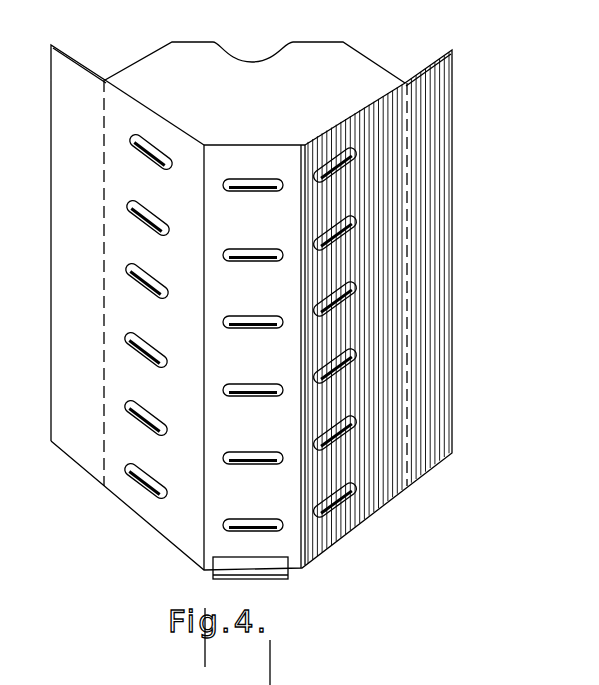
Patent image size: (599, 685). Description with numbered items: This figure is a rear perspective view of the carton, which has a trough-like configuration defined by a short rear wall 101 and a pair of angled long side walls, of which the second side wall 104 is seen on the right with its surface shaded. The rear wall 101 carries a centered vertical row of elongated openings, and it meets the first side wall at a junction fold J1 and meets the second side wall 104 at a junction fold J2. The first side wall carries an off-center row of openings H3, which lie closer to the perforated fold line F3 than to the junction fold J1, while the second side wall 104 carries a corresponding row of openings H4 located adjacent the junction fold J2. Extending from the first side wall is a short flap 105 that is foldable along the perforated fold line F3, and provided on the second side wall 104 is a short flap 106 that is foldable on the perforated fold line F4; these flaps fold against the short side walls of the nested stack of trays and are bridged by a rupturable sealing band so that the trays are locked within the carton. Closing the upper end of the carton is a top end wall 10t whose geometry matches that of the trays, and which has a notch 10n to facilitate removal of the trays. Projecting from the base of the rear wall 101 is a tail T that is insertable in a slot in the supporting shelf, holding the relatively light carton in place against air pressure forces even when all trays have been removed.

The top end wall 10t is at (182, 52).
The notch 10n is at (280, 50).
The second side wall 104 is at (386, 86).
The short flap 106 is at (447, 112).
The short flap 105 is at (57, 215).
The perforated fold line F3 is at (104, 243).
The perforated fold line F4 is at (407, 229).
The openings H3 is at (160, 167).
The openings H4 is at (347, 166).
The junction fold J1 is at (204, 393).
The junction fold J2 is at (302, 403).
The tail T is at (213, 577).
The rear wall 101 is at (306, 558).